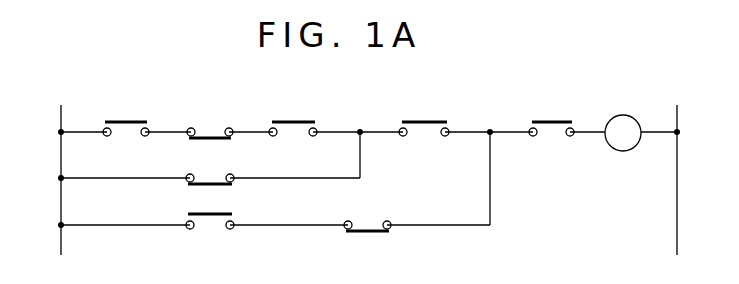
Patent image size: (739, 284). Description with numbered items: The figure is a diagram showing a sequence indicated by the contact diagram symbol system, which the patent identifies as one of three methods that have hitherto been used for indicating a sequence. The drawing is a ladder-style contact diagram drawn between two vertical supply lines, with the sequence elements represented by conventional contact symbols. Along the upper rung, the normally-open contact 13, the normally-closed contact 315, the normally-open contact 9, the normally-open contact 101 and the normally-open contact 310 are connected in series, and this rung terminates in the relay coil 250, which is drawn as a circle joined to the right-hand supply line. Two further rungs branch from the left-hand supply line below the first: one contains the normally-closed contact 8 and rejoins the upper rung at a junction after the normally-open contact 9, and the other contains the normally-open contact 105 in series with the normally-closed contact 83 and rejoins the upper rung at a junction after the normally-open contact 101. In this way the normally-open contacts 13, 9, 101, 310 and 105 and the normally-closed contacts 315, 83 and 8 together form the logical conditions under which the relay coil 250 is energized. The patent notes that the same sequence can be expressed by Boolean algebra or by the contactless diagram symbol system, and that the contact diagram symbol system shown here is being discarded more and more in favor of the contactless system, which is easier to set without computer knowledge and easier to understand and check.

The normally-open contact 13 is at (126, 115).
The normally-closed contact 315 is at (210, 116).
The normally-open contact 9 is at (293, 115).
The normally-open contact 101 is at (424, 115).
The normally-open contact 310 is at (551, 115).
The relay coil 250 is at (624, 122).
The normally-closed contact 8 is at (210, 168).
The normally-open contact 105 is at (210, 236).
The normally-closed contact 83 is at (367, 240).